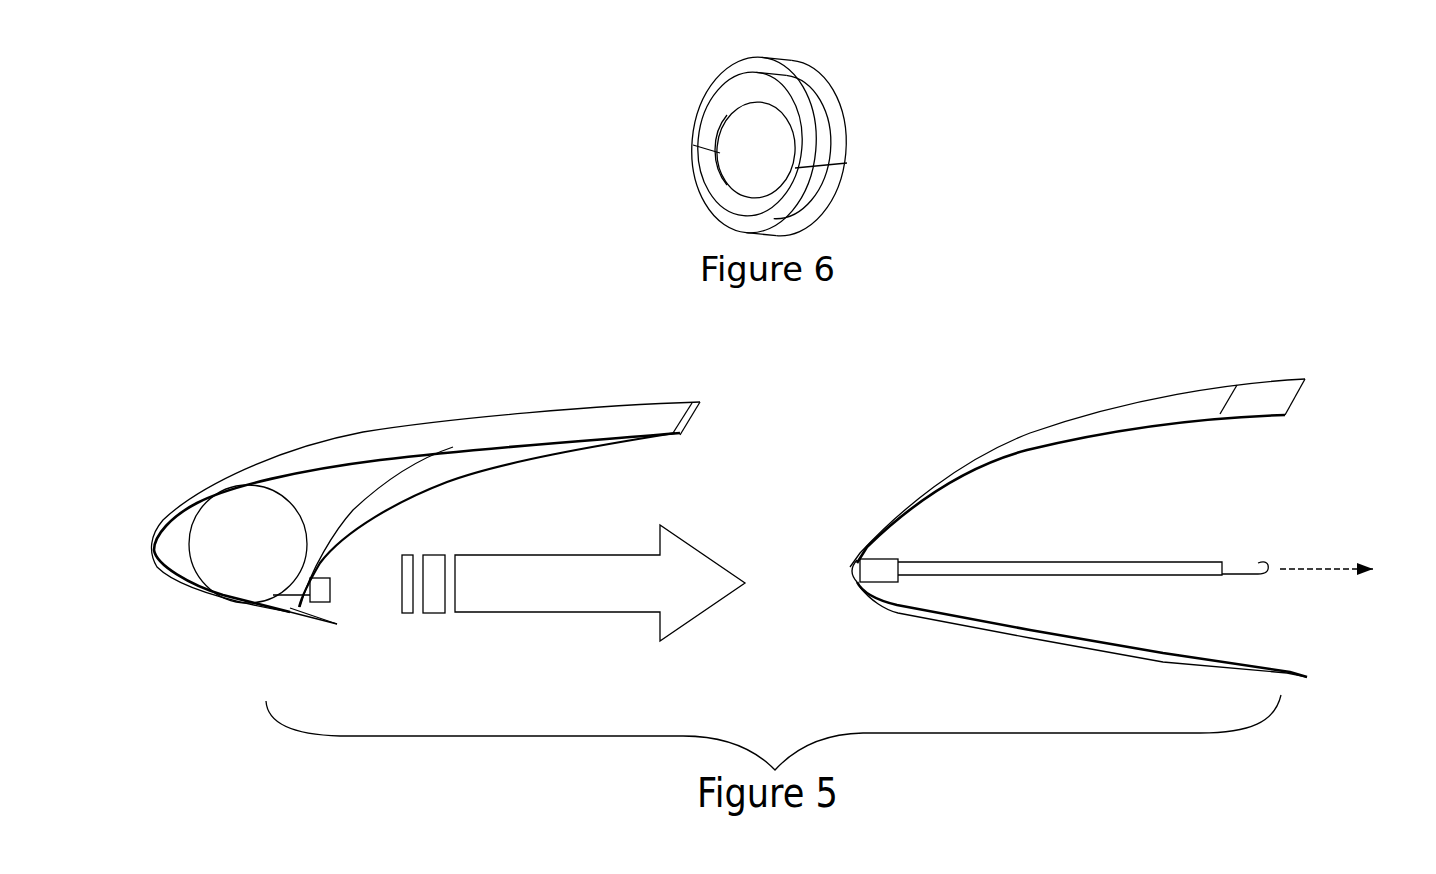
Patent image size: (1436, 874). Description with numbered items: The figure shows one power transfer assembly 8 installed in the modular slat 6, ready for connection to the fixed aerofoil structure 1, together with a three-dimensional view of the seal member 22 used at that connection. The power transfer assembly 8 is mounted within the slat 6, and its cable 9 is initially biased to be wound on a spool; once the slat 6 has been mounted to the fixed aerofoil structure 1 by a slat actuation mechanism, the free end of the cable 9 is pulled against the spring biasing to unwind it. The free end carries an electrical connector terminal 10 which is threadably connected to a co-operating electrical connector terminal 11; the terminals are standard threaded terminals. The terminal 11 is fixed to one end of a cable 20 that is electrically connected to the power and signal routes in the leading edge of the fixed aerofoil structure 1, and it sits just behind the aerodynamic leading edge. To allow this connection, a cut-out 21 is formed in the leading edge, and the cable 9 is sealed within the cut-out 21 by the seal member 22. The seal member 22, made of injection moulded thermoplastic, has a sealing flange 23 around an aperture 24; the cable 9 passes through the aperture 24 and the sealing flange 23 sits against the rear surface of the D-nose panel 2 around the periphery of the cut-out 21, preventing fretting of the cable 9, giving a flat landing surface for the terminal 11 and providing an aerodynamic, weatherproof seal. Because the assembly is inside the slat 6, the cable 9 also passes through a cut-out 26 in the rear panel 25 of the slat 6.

In FIG. 5, the fixed aerofoil structure 1 is at (1115, 482).
In FIG. 5, the D-nose panel 2 is at (1127, 418).
In FIG. 5, the slat 6 is at (507, 388).
In FIG. 5, the power transfer assembly 8 is at (245, 518).
In FIG. 5, the cable 9 is at (297, 587).
In FIG. 5, the electrical connector terminal 10 is at (335, 578).
In FIG. 5, the electrical connector terminal 11 is at (880, 557).
In FIG. 5, the cable 20 is at (1110, 558).
In FIG. 5, the cut-out 21 is at (853, 583).
In FIG. 6, the seal member 22 is at (798, 145).
In FIG. 5, the seal member 22 is at (855, 558).
In FIG. 6, the sealing flange 23 is at (817, 187).
In FIG. 6, the aperture 24 is at (752, 162).
In FIG. 5, the rear panel 25 is at (490, 464).
In FIG. 5, the cut-out 26 is at (298, 603).